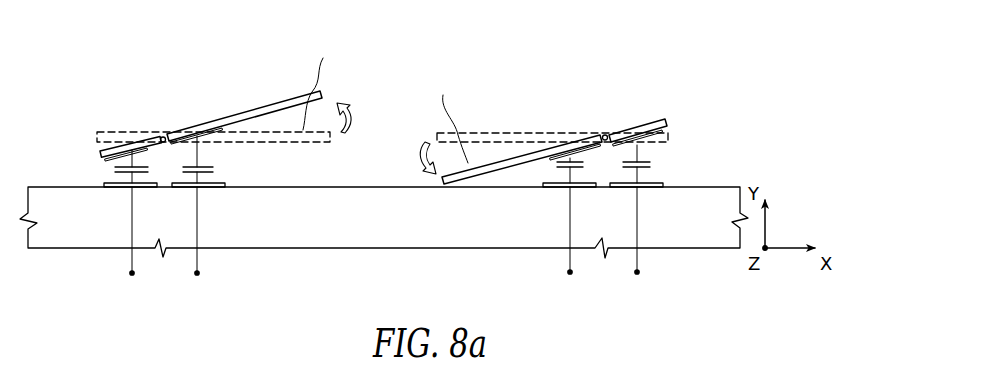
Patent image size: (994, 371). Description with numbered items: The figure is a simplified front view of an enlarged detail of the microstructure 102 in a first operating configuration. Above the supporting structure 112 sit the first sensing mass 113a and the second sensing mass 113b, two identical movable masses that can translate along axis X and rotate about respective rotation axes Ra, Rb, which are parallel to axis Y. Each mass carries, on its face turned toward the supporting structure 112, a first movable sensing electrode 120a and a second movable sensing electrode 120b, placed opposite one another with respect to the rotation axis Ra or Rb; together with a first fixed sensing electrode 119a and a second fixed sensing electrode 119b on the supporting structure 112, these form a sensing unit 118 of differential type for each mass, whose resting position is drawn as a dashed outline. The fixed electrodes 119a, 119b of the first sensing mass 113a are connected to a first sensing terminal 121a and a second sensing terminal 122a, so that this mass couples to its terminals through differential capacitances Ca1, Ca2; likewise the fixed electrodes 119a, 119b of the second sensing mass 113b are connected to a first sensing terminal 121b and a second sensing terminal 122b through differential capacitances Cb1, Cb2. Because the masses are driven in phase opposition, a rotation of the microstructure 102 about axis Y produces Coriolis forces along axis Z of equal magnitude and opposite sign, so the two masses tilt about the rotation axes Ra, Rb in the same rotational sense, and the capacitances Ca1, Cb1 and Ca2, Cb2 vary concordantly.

The microstructure 102 is at (178, 65).
The supporting structure 112 is at (362, 243).
The first sensing mass 113a is at (316, 82).
The second sensing mass 113b is at (445, 117).
The sensing unit 118 is at (290, 164).
The first fixed sensing electrode 119a is at (210, 190).
The second fixed sensing electrode 119b is at (117, 188).
The first movable sensing electrode 120a is at (217, 113).
The second movable sensing electrode 120b is at (112, 133).
The first sensing terminal 121a is at (200, 273).
The first sensing terminal 121b is at (566, 272).
The second sensing terminal 122a is at (129, 273).
The second sensing terminal 122b is at (640, 272).
The rotation axis Ra is at (162, 136).
The rotation axis Rb is at (606, 134).
The differential capacitance Ca1 is at (228, 159).
The differential capacitance Ca2 is at (102, 167).
The differential capacitance Cb1 is at (549, 172).
The differential capacitance Cb2 is at (666, 166).